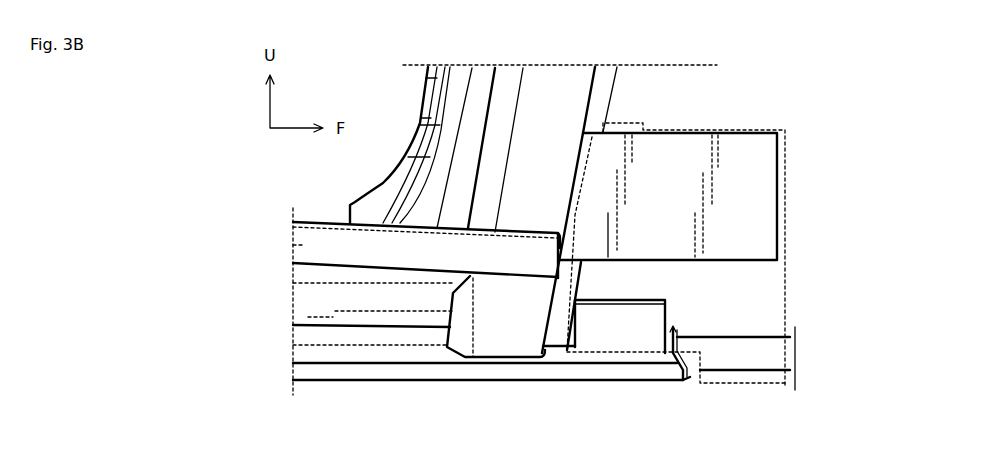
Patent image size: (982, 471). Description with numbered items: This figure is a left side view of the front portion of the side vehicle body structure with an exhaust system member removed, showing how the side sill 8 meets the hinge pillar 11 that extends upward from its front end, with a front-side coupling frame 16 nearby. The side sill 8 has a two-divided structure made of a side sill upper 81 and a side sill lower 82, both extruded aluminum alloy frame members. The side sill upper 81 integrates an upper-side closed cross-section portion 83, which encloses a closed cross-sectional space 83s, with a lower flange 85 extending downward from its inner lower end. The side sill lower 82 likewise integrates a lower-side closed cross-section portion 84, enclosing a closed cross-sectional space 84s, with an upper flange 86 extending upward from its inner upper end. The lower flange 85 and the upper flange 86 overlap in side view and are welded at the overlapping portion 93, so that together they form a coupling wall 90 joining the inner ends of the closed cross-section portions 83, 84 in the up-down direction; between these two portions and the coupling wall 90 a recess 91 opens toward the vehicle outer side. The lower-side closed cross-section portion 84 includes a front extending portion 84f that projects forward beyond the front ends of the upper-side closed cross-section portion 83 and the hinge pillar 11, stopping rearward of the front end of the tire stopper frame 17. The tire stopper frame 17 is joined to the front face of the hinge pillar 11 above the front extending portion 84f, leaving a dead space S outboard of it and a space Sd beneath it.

The side sill 8 is at (318, 216).
The hinge pillar 11 is at (601, 90).
The front-side coupling frame 16 is at (738, 373).
The tire stopper frame 17 is at (738, 133).
The side sill upper 81 is at (302, 216).
The side sill lower 82 is at (349, 392).
The upper-side closed cross-section portion 83 is at (333, 220).
The closed cross-sectional space 83s is at (305, 245).
The lower-side closed cross-section portion 84 is at (380, 383).
The closed cross-sectional space 84s is at (532, 373).
The front extending portion 84f is at (618, 380).
The lower flange 85 is at (298, 303).
The upper flange 86 is at (302, 337).
The coupling wall 90 is at (284, 362).
The recess 91 is at (426, 316).
The overlapping portion 93 is at (297, 315).
The dead space S is at (787, 160).
The space Sd is at (732, 300).